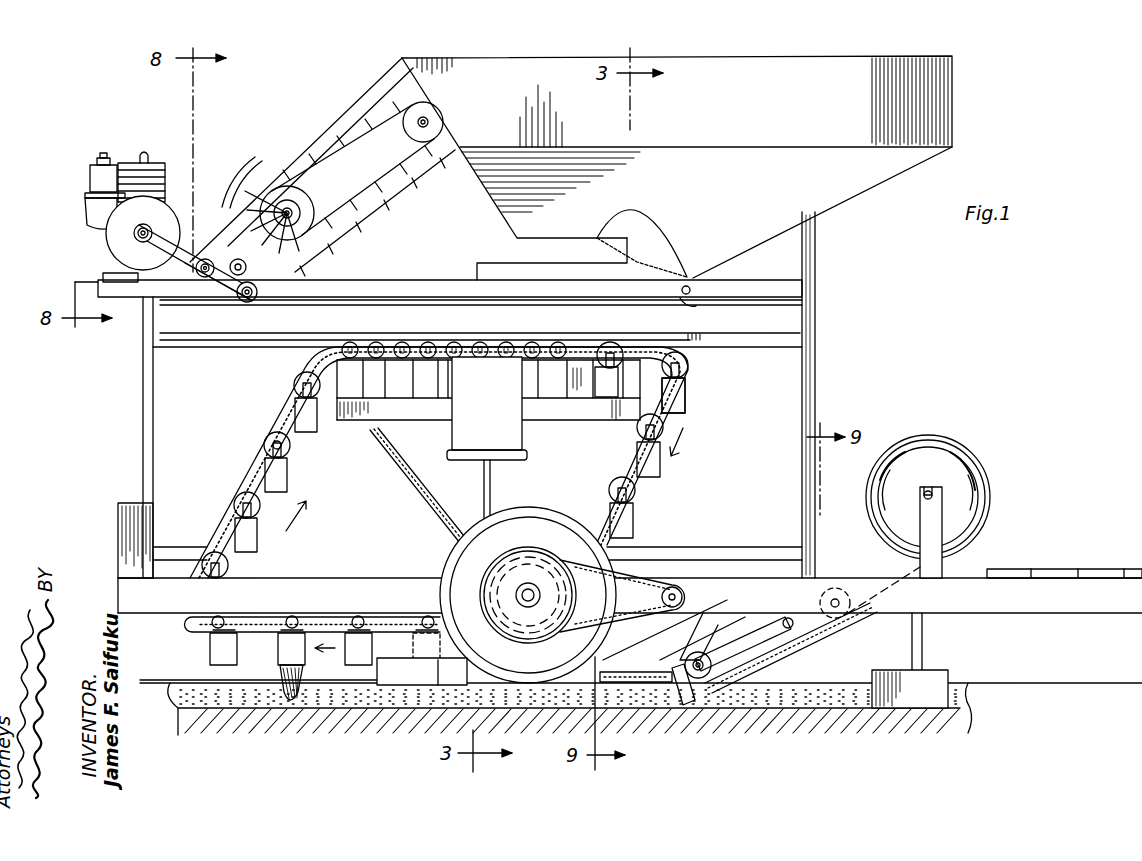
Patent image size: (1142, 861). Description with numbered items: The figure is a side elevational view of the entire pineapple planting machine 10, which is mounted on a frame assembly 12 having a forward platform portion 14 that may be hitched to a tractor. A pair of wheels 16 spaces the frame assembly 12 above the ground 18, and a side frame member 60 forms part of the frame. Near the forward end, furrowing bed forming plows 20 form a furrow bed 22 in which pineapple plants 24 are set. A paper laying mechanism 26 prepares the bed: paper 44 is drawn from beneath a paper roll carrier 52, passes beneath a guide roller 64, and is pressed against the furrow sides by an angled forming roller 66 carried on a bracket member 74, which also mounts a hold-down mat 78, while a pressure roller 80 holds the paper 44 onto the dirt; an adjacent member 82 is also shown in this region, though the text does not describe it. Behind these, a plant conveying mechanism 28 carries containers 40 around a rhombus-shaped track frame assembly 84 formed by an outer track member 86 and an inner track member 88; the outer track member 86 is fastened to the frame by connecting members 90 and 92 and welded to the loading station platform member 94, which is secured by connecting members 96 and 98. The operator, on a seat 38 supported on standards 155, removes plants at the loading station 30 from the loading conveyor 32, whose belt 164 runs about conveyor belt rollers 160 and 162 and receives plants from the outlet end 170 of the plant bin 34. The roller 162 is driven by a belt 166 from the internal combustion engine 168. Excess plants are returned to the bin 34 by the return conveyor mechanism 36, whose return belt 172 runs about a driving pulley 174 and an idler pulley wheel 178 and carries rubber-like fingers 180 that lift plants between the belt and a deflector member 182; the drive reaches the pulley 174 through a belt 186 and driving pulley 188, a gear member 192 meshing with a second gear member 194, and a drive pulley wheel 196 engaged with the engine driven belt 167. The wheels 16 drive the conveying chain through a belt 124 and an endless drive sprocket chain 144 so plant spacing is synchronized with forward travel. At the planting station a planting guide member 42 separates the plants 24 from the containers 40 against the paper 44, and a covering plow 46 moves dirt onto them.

The planting machine 10 is at (930, 290).
The frame assembly 12 is at (820, 420).
The forward platform portion 14 is at (1105, 568).
The wheels 16 is at (448, 565).
The ground 18 is at (782, 715).
The furrowing bed forming plows 20 is at (925, 700).
The furrow bed 22 is at (748, 700).
The pineapple plants 24 is at (285, 700).
The paper laying mechanism 26 is at (812, 645).
The plant conveying mechanism 28 is at (685, 490).
The loading station 30 is at (560, 330).
The loading conveyor 32 is at (690, 306).
The plant bin 34 is at (860, 180).
The excess plant return conveyor mechanism 36 is at (400, 212).
The operator's seat 38 is at (488, 401).
The containers 40 is at (680, 395).
The planting guide member 42 is at (318, 685).
The paper 44 is at (395, 686).
The covering plow 46 is at (428, 686).
The paper roll carrier 52 is at (992, 490).
The side frame member 60 is at (812, 590).
The guide roller 64 is at (850, 595).
The angled forming roller 66 is at (684, 705).
The bracket member 74 is at (715, 622).
The hold-down mat 78 is at (643, 683).
The pressure roller 80 is at (703, 680).
The arm 82 is at (765, 640).
The track frame assembly 84 is at (608, 464).
The outer track member 86 is at (275, 425).
The inner track member 88 is at (290, 446).
The connecting member 90 is at (172, 552).
The connecting member 92 is at (714, 556).
The loading station platform member 94 is at (410, 340).
The connecting member 96 is at (200, 350).
The connecting member 98 is at (767, 348).
The belt 124 is at (640, 585).
The endless drive sprocket chain 144 is at (400, 470).
The standards 155 is at (491, 492).
The conveyor belt roller 160 is at (695, 282).
The conveyor belt roller 162 is at (247, 302).
The belt 164 is at (565, 278).
The belt 166 is at (225, 296).
The engine driven belt 167 is at (150, 215).
The internal combustion engine 168 is at (100, 256).
The outlet end 170 is at (638, 262).
The return belt 172 is at (352, 205).
The driving pulley 174 is at (305, 192).
The idler pulley wheel 178 is at (405, 128).
The rubber-like fingers 180 is at (418, 186).
The deflector member 182 is at (225, 185).
The belt 186 is at (290, 260).
The driving pulley 188 is at (352, 236).
The gear member 192 is at (230, 228).
The second gear member 194 is at (170, 290).
The drive pulley wheel 196 is at (198, 278).